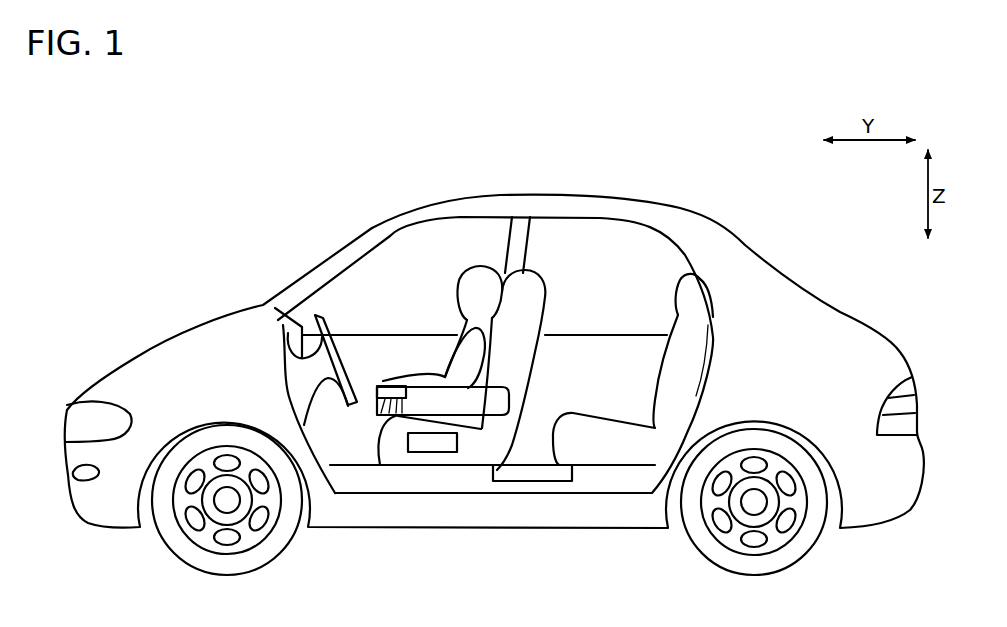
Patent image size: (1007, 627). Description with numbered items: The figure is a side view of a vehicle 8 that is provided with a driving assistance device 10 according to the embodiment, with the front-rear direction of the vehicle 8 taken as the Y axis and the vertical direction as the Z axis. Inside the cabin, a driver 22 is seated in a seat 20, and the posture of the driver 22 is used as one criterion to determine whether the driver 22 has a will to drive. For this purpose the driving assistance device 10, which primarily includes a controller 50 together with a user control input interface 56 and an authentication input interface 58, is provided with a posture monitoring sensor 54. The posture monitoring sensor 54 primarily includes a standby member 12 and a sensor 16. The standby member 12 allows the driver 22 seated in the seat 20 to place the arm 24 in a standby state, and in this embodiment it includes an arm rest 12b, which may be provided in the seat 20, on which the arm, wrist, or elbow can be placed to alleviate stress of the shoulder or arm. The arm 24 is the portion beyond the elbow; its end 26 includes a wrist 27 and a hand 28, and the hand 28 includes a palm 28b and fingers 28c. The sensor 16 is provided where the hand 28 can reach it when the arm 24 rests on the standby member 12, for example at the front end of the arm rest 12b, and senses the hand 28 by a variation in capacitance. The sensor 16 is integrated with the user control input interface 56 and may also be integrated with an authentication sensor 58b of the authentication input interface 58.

The vehicle 8 is at (767, 277).
The driving assistance device 10 is at (132, 291).
The standby member 12 is at (493, 424).
The arm rest 12b is at (443, 418).
The sensor 16 is at (393, 415).
The seat 20 is at (505, 365).
The driver 22 is at (477, 248).
The arm 24 is at (445, 376).
The end of the arm 26 is at (330, 186).
The wrist 27 is at (403, 383).
The hand 28 is at (295, 220).
The palm of the hand 28b is at (381, 386).
The finger 28c is at (377, 387).
The controller 50 is at (440, 447).
The posture monitoring sensor 54 is at (385, 413).
The user control input interface 56 is at (400, 417).
The authentication input interface 58 is at (396, 415).
The authentication sensor 58b is at (395, 420).